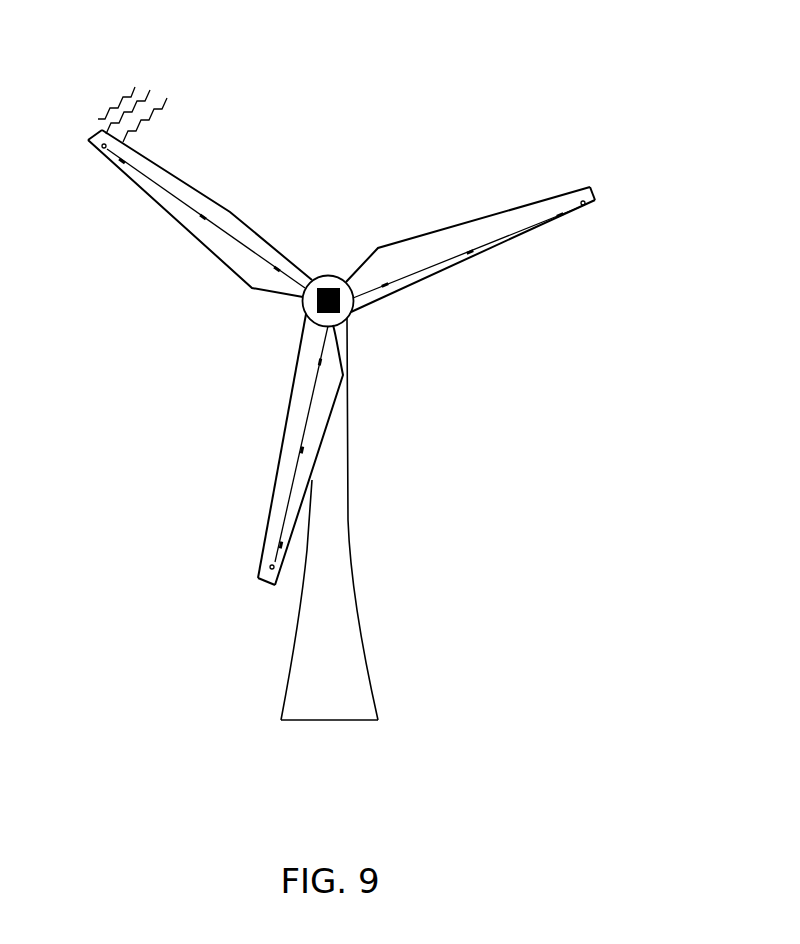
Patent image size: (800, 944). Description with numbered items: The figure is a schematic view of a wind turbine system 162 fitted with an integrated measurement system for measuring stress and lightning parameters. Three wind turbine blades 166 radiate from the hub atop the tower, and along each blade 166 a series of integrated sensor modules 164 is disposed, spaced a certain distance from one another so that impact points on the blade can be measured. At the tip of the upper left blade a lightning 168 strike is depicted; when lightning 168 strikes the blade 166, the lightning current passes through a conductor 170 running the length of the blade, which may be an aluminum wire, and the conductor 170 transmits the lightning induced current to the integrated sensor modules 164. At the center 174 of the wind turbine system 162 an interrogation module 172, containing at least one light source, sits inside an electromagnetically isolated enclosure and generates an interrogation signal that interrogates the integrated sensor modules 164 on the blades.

The wind turbine system 162 is at (665, 78).
The integrated sensor modules 164 is at (277, 272).
The wind turbine blades 166 is at (341, 357).
The lightning 168 is at (126, 102).
The conductor 170 is at (497, 232).
The interrogation module 172 is at (328, 283).
The center 174 is at (302, 302).